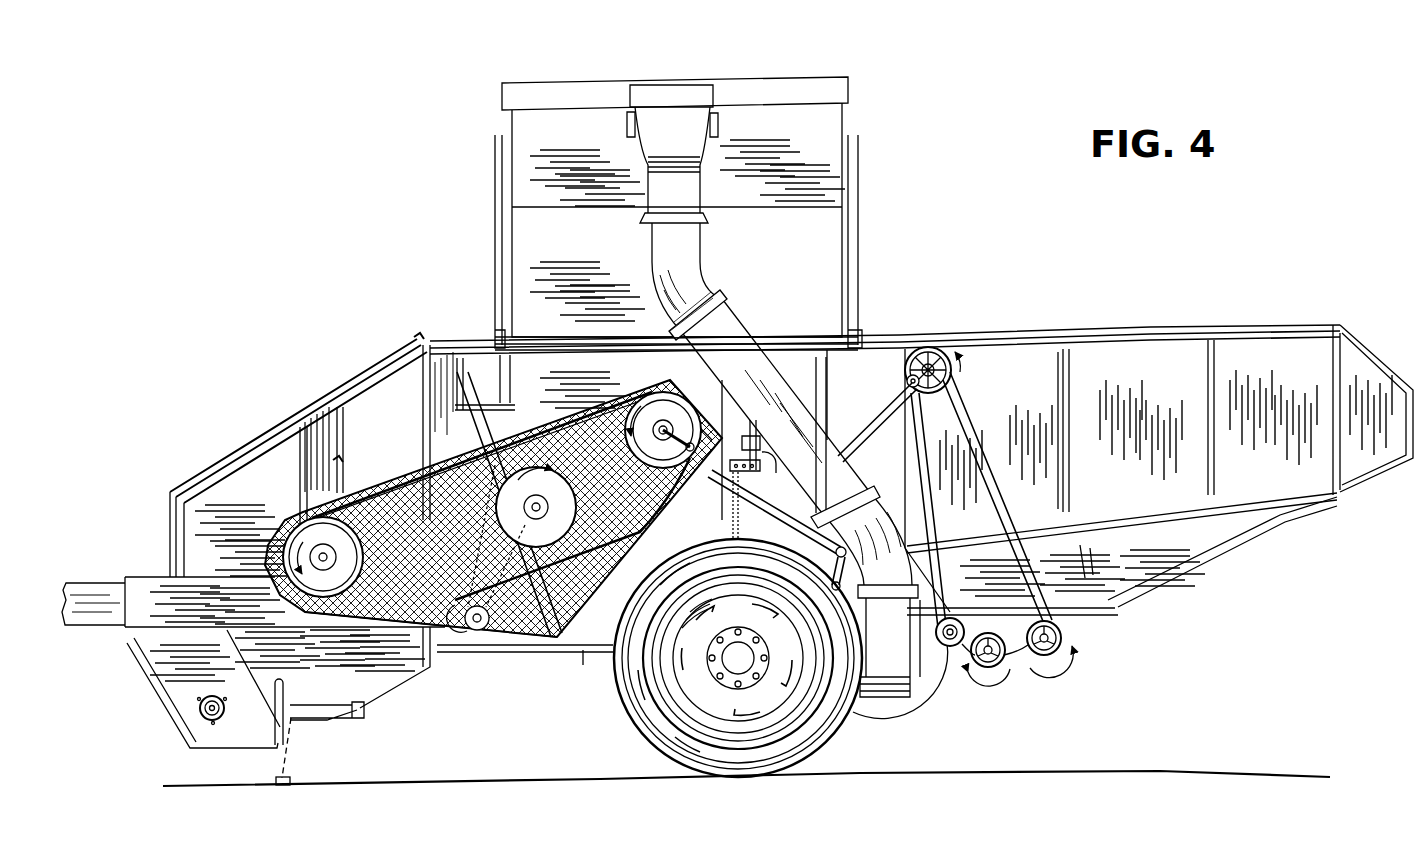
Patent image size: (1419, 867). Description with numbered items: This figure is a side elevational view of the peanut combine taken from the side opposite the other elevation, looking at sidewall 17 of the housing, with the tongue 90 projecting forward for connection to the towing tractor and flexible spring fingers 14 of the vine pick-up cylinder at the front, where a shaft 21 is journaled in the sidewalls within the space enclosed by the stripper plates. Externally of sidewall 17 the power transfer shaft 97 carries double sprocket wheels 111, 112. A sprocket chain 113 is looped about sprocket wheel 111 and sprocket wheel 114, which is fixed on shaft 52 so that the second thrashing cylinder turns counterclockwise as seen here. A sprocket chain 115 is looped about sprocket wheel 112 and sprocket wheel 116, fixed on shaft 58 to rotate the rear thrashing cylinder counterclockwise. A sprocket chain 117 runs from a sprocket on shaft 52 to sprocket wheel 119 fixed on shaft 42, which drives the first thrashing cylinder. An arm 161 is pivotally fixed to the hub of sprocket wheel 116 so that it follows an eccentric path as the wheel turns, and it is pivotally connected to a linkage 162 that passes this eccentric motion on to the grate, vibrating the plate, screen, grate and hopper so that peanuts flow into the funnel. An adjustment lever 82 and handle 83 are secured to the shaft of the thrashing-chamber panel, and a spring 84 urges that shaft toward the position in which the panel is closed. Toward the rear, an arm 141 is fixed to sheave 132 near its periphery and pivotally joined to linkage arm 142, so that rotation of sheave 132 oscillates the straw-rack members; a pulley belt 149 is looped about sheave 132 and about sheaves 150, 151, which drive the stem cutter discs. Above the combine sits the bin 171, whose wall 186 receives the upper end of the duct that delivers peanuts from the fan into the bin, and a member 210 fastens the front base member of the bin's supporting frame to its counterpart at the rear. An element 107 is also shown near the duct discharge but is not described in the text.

The flexible spring fingers 14 is at (172, 760).
The sidewall 17 is at (1132, 411).
The shaft 21 is at (212, 696).
The shaft 42 is at (330, 557).
The shaft 52 is at (538, 510).
The shaft 58 is at (673, 425).
The adjustment lever 82 is at (750, 473).
The handle 83 is at (768, 430).
The spring 84 is at (733, 510).
The tongue 90 is at (110, 588).
The power transfer shaft 97 is at (481, 633).
The discharge pipe 107 is at (892, 695).
The sprocket wheel 111 is at (456, 645).
The sprocket wheel 112 is at (512, 637).
The sprocket chain 113 is at (585, 538).
The sprocket wheel 114 is at (548, 478).
The sprocket chain 115 is at (652, 538).
The sprocket wheel 116 is at (652, 453).
The sprocket chain 117 is at (355, 513).
The sprocket wheel 119 is at (318, 532).
The sheave 132 is at (943, 353).
The arm 141 is at (873, 423).
The linkage arm 142 is at (882, 505).
The pulley belt 149 is at (976, 421).
The sheave 150 is at (989, 670).
The sheave 151 is at (1047, 658).
The arm 161 is at (796, 518).
The linkage 162 is at (813, 580).
The bin 171 is at (880, 122).
The wall 186 is at (777, 247).
The member 210 is at (786, 330).